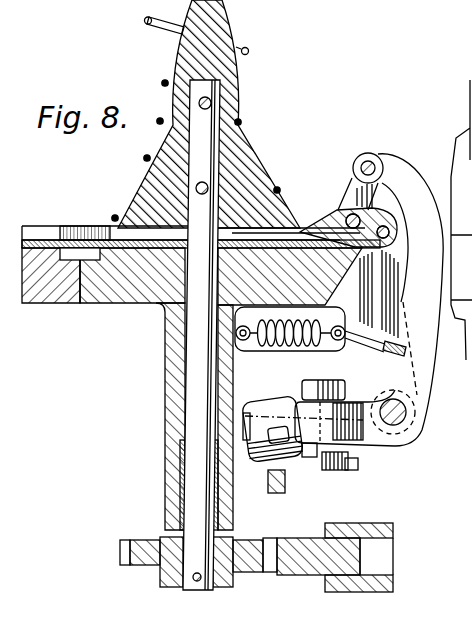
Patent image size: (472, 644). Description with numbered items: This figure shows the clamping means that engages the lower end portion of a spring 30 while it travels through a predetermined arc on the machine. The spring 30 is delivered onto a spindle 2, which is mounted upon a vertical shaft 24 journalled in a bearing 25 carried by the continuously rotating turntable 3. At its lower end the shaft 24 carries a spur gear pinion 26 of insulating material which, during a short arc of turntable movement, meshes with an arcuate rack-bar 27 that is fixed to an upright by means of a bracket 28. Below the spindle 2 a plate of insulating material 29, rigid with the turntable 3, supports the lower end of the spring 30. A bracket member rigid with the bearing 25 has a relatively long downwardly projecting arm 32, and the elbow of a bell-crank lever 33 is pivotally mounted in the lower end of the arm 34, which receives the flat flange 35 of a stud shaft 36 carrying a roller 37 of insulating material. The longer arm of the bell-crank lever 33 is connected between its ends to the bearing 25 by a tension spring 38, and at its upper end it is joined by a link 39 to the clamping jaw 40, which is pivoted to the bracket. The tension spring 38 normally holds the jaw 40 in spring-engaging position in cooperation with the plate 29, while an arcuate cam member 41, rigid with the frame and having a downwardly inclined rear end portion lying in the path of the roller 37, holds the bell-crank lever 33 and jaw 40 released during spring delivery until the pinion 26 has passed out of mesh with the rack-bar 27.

The spindle 2 is at (230, 147).
The turntable 3 is at (30, 303).
The vertical shaft 24 is at (193, 371).
The bearing 25 is at (166, 454).
The spur gear pinion 26 is at (228, 590).
The arcuate rack-bar 27 is at (297, 577).
The bracket 28 is at (391, 543).
The plate of insulating material 29 is at (117, 229).
The spring 30 is at (250, 53).
The downwardly projecting arm 32 is at (370, 272).
The bell-crank lever 33 is at (407, 428).
The arm 34 is at (361, 444).
The flat flange 35 is at (322, 468).
The stud shaft 36 is at (246, 445).
The roller 37 is at (271, 400).
The tension spring 38 is at (292, 350).
The link 39 is at (356, 187).
The clamping jaw 40 is at (336, 213).
The arcuate cam member 41 is at (278, 490).